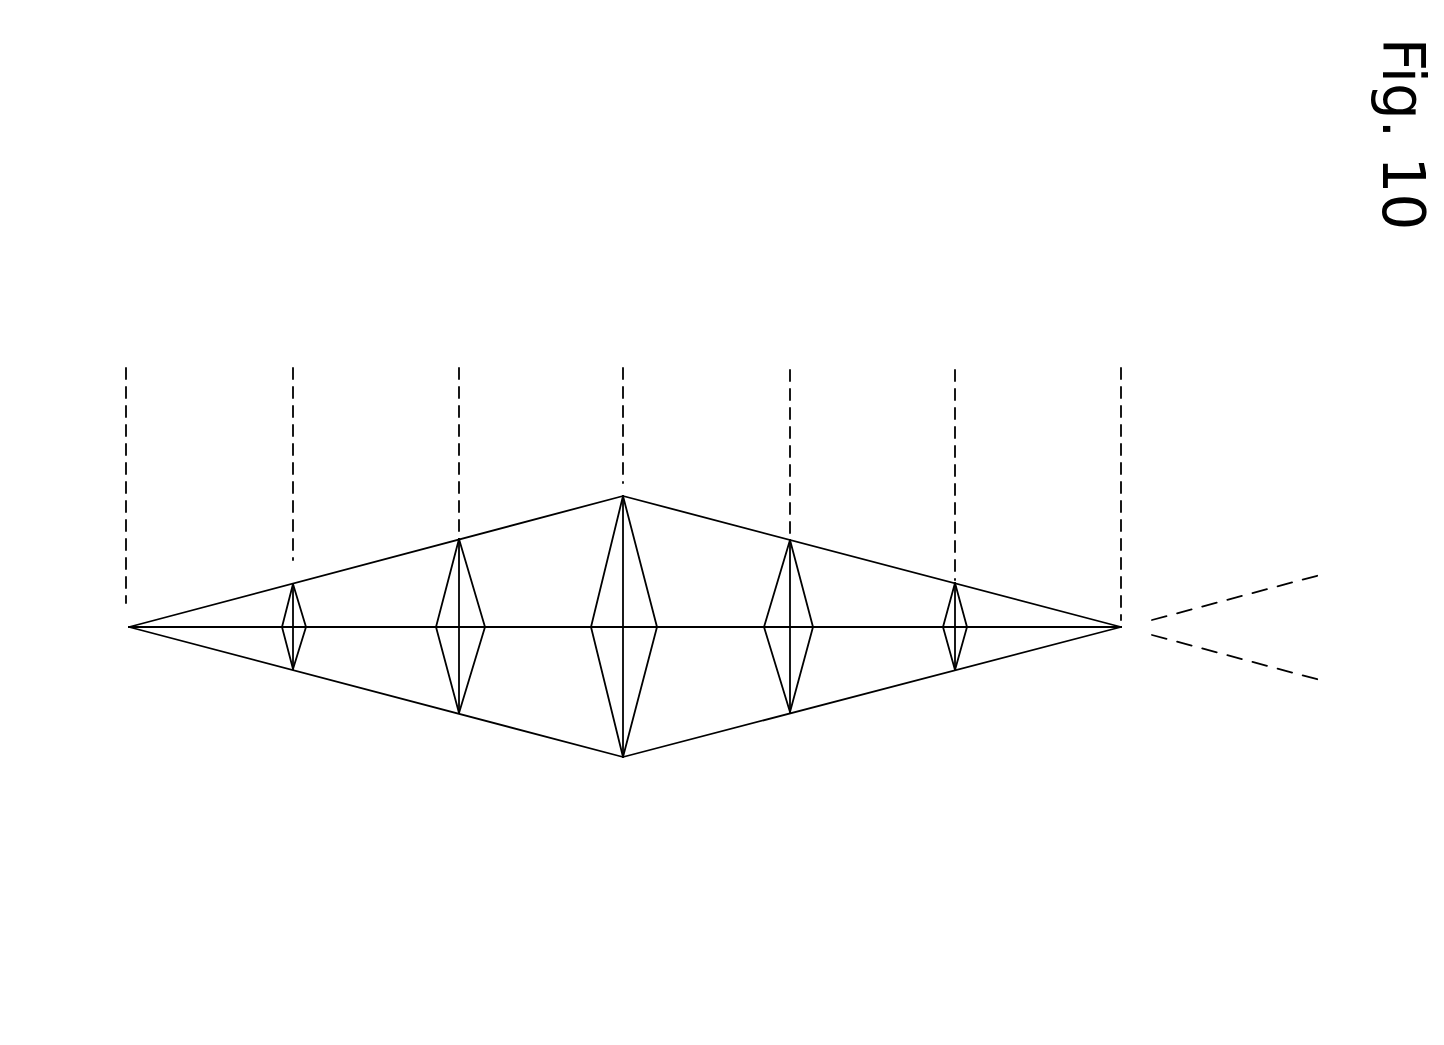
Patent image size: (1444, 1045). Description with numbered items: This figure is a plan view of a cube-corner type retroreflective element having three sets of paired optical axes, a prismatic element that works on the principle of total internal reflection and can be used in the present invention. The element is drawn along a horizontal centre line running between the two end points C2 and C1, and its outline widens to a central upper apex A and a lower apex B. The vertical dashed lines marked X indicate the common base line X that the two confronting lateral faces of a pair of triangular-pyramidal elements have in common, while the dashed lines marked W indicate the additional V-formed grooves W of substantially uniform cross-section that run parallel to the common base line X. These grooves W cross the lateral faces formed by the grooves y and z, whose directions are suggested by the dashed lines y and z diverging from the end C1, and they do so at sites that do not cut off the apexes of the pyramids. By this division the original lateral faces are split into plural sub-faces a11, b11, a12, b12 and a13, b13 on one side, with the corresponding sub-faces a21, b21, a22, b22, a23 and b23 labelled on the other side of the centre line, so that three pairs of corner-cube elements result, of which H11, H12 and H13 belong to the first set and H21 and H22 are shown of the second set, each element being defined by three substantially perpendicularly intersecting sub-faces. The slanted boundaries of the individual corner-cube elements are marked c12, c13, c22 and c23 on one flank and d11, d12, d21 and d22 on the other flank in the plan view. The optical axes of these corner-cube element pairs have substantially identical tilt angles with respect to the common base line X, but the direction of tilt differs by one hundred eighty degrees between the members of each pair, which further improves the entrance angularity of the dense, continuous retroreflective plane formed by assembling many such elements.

The upper apex point of central aperture A is at (625, 541).
The lower apex point of central aperture B is at (625, 717).
The first light convergence point C1 is at (1054, 651).
The second light convergence point C2 is at (179, 627).
The common base line X is at (624, 471).
The V-formed groove W is at (623, 451).
The base line of lateral face y is at (1255, 589).
The base line of lateral face z is at (1253, 669).
The corner-cube element H11 is at (666, 626).
The corner-cube element H12 is at (826, 626).
The corner-cube element H13 is at (967, 628).
The corner-cube element H21 is at (581, 626).
The corner-cube element H22 is at (425, 626).
The sub-face a11 is at (710, 609).
The sub-face b11 is at (710, 649).
The sub-face a12 is at (878, 611).
The sub-face b12 is at (878, 648).
The sub-face a13 is at (1044, 614).
The sub-face b13 is at (1042, 646).
The distance a21 is at (538, 649).
The distance b21 is at (538, 608).
The distance a22 is at (371, 648).
The distance b22 is at (371, 612).
The distance a23 is at (205, 614).
The distance b23 is at (205, 643).
The aperture edge c12 is at (798, 627).
The aperture edge c13 is at (965, 627).
The aperture edge c22 is at (452, 620).
The aperture edge c23 is at (285, 618).
The aperture edge d11 is at (780, 627).
The aperture edge d12 is at (947, 625).
The aperture edge d21 is at (476, 622).
The aperture edge d22 is at (303, 617).